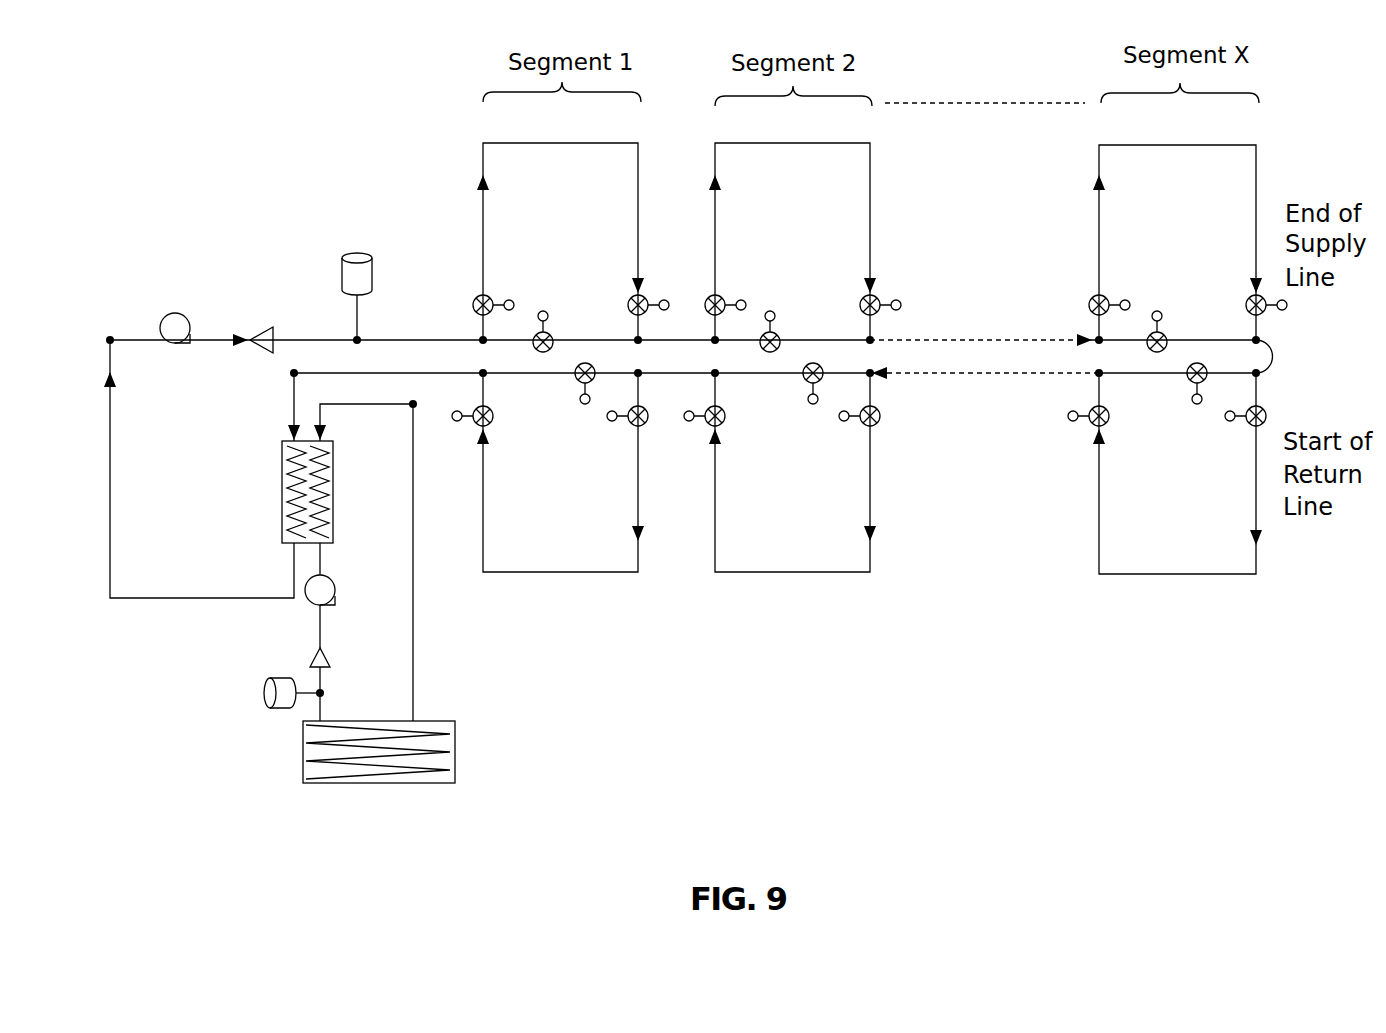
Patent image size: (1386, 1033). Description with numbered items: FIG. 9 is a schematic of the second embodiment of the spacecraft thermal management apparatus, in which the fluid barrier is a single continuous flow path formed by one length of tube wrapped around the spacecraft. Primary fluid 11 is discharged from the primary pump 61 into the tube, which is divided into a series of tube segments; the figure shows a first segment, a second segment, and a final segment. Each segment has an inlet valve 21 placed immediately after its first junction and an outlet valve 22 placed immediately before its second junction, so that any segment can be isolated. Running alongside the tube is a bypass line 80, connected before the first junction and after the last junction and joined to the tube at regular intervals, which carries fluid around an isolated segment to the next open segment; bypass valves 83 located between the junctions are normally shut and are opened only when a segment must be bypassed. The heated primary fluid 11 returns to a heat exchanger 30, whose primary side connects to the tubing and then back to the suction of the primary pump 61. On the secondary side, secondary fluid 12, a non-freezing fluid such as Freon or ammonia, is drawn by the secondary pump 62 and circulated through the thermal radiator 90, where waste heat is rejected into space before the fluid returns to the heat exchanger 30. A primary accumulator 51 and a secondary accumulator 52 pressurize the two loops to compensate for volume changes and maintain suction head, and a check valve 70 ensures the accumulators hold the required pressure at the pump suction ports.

The primary fluid 11 is at (292, 393).
The secondary fluid 12 is at (413, 560).
The inlet valve 21 is at (476, 298).
The outlet valve 22 is at (646, 294).
The heat exchanger 30 is at (282, 507).
The primary accumulator 51 is at (342, 251).
The secondary accumulator 52 is at (262, 708).
The primary pump 61 is at (166, 314).
The secondary pump 62 is at (310, 602).
The check valve 70 is at (262, 329).
The bypass line 80 is at (965, 374).
The bypass valve 83 is at (548, 306).
The thermal radiator 90 is at (457, 738).